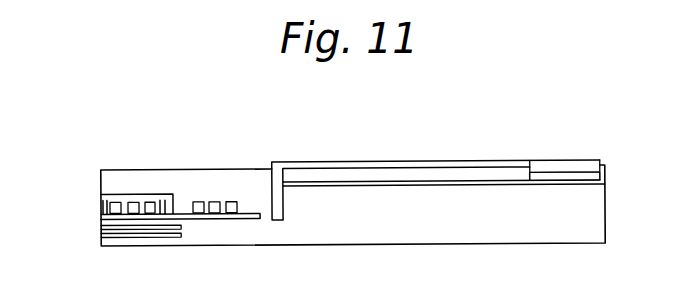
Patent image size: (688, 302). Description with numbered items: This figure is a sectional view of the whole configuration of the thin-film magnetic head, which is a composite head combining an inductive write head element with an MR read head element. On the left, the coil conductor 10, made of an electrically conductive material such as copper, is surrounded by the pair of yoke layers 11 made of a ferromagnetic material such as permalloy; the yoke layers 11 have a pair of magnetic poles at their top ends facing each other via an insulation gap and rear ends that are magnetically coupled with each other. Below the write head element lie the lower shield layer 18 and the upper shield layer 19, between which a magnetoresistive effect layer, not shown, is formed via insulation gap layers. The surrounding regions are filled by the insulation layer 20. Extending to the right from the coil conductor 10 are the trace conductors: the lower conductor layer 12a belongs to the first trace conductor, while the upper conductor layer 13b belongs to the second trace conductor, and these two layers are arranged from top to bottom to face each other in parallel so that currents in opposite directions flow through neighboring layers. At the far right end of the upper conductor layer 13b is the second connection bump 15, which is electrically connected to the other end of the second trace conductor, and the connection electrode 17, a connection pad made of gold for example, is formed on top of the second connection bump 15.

The coil conductor 10 is at (197, 201).
The yoke layers 11 is at (101, 213).
The lower conductor layer 12a is at (375, 186).
The upper conductor layer 13b is at (374, 162).
The second connection bump 15 is at (593, 173).
The connection electrode 17 is at (583, 162).
The lower shield layer 18 is at (101, 235).
The upper shield layer 19 is at (101, 226).
The insulation layer 20 is at (237, 183).